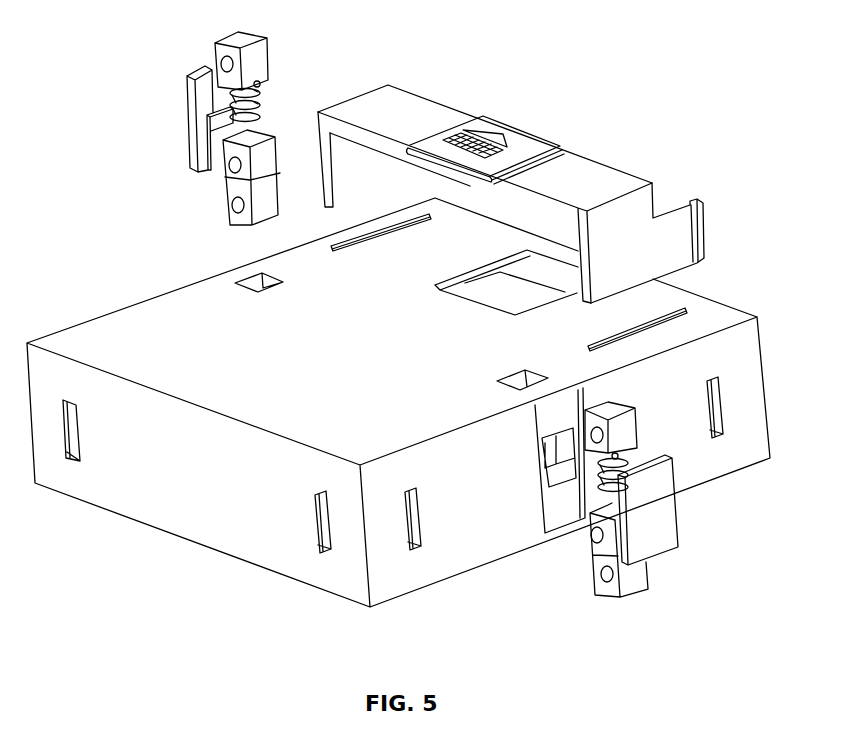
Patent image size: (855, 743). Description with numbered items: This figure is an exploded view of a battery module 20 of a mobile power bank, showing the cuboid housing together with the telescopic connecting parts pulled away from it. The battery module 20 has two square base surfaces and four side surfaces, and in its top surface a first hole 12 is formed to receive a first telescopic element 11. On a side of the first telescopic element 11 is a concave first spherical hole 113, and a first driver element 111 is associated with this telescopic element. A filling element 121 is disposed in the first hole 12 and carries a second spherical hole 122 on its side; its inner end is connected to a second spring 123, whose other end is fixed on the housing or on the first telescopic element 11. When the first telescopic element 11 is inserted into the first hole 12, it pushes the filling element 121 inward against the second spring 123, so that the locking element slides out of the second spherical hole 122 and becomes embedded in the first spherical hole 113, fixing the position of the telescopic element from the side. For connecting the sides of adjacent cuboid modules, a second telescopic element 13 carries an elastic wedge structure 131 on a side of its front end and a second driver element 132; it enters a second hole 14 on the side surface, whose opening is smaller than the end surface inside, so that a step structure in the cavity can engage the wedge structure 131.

The first telescopic element 11 is at (438, 350).
The first driver element 111 is at (186, 127).
The first spherical hole 113 is at (222, 173).
The first hole 12 is at (240, 283).
The filling element 121 is at (393, 239).
The second spherical hole 122 is at (217, 53).
The second spring 123 is at (260, 96).
The second telescopic element 13 is at (558, 174).
The wedge structure 131 is at (705, 251).
The second driver element 132 is at (517, 138).
The second hole 14 is at (720, 407).
The battery module 20 is at (417, 436).